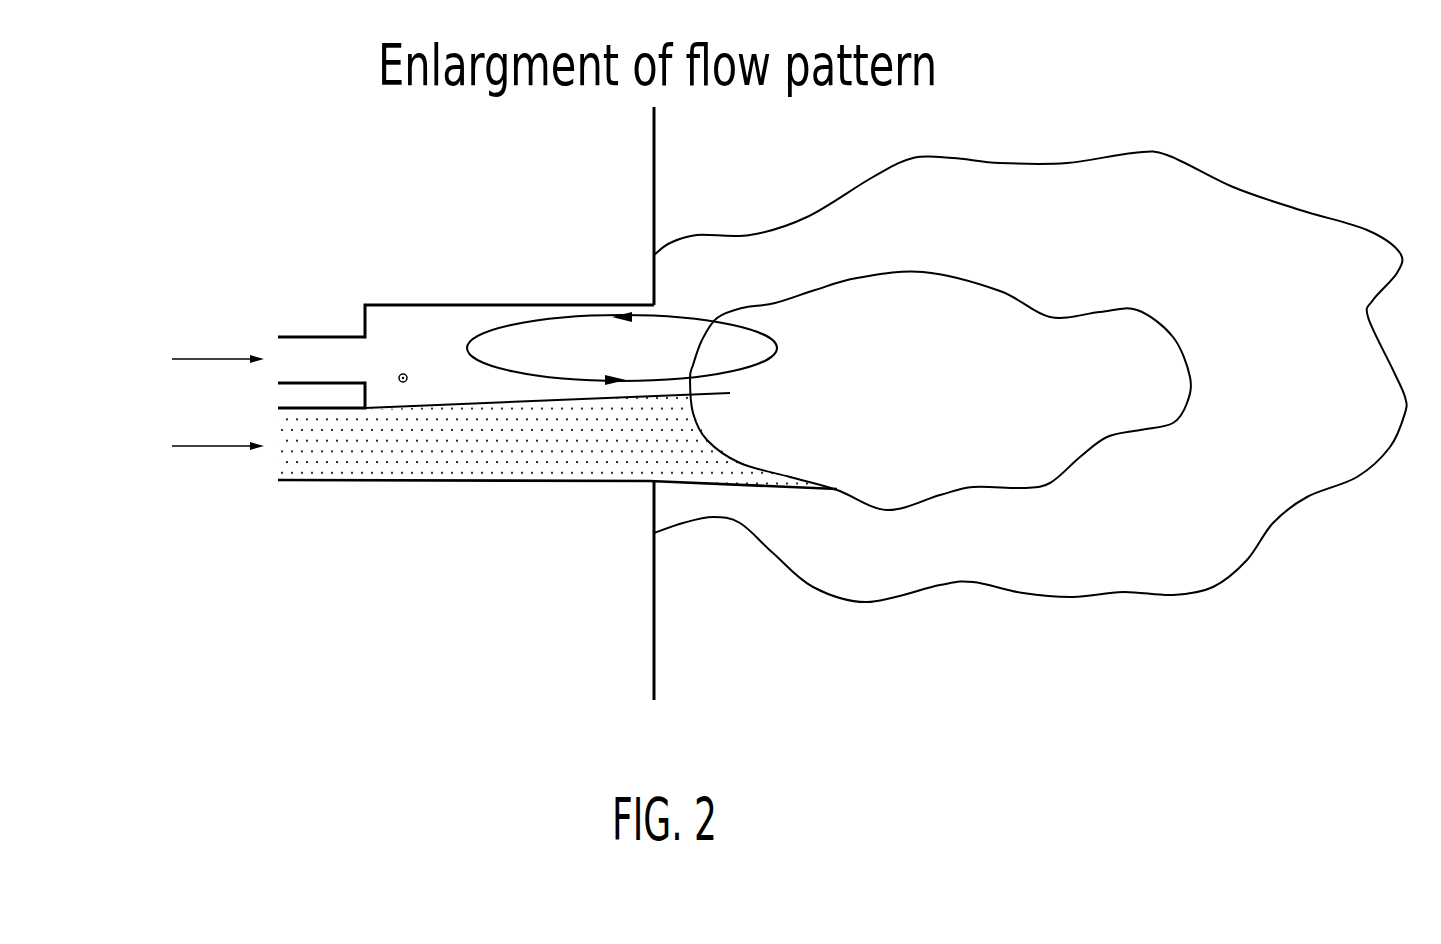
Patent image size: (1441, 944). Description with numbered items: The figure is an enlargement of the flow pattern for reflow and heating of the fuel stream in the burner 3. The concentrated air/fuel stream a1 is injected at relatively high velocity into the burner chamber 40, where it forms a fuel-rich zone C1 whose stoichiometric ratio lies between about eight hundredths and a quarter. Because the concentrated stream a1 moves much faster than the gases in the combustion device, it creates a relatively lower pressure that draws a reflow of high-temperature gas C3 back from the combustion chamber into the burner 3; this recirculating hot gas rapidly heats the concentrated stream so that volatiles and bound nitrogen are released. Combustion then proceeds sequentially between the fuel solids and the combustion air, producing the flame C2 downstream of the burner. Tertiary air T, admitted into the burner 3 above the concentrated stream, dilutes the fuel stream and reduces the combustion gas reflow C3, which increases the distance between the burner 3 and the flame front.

The burner 3 is at (504, 313).
The burner chamber 40 is at (481, 301).
The tertiary air T is at (197, 362).
The concentrated air/fuel stream a1 is at (195, 455).
The fuel-rich zone C1 is at (557, 442).
The flame C2 is at (940, 390).
The reflow of high-temperature gas C3 is at (622, 348).